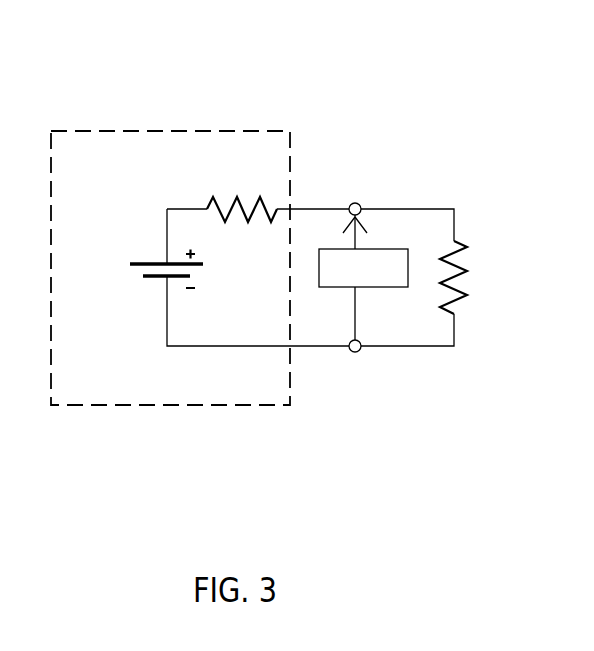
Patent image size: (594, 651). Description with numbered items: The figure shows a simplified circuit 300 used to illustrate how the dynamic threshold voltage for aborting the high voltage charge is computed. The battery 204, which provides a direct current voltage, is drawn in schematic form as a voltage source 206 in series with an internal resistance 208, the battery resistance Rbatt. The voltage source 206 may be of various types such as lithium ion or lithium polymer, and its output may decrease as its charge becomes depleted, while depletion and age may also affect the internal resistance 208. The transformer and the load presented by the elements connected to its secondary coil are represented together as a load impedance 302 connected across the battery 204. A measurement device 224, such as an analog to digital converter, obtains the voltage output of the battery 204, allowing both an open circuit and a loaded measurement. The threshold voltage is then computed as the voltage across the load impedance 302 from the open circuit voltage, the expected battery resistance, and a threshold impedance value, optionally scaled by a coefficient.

The simplified circuit 300 is at (341, 90).
The battery 204 is at (113, 131).
The voltage source 206 is at (155, 277).
The internal resistance 208 is at (225, 223).
The measurement device 224 is at (377, 288).
The load impedance 302 is at (459, 245).